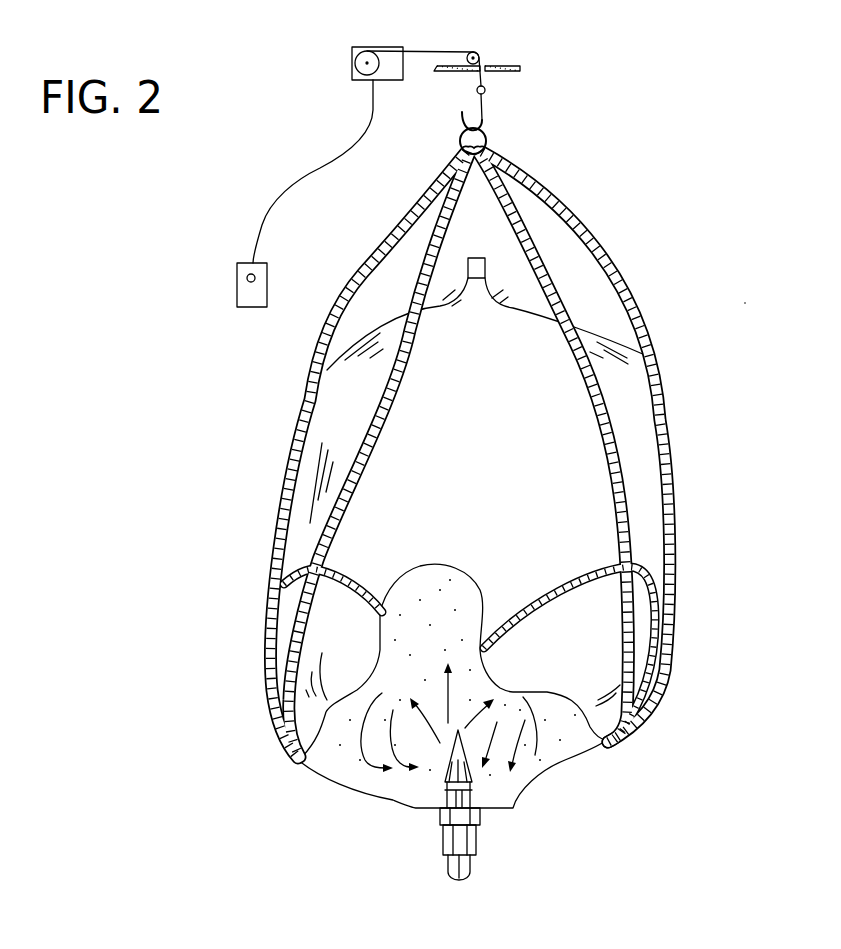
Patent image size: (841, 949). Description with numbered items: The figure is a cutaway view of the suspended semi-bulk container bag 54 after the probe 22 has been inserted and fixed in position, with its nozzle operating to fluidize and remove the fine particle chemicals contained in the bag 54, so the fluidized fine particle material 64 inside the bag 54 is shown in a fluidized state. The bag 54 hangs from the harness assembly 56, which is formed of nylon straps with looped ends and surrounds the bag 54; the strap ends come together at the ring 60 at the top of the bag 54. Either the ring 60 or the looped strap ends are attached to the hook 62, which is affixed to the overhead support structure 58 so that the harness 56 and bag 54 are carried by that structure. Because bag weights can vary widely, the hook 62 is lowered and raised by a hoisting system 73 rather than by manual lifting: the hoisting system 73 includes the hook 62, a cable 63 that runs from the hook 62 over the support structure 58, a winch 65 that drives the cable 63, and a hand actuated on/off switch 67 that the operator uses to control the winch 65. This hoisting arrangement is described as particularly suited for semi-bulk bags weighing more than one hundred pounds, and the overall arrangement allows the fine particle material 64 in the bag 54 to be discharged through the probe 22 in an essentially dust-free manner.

The probe 22 is at (433, 797).
The semi-bulk container bag 54 is at (458, 441).
The harness assembly 56 is at (347, 507).
The overhead support structure 58 is at (507, 64).
The ring 60 is at (455, 134).
The hook 62 is at (488, 107).
The cable 63 is at (418, 56).
The dry material 64 is at (561, 758).
The winch 65 is at (357, 82).
The hand actuated on/off switch 67 is at (255, 310).
The hoisting system 73 is at (345, 62).